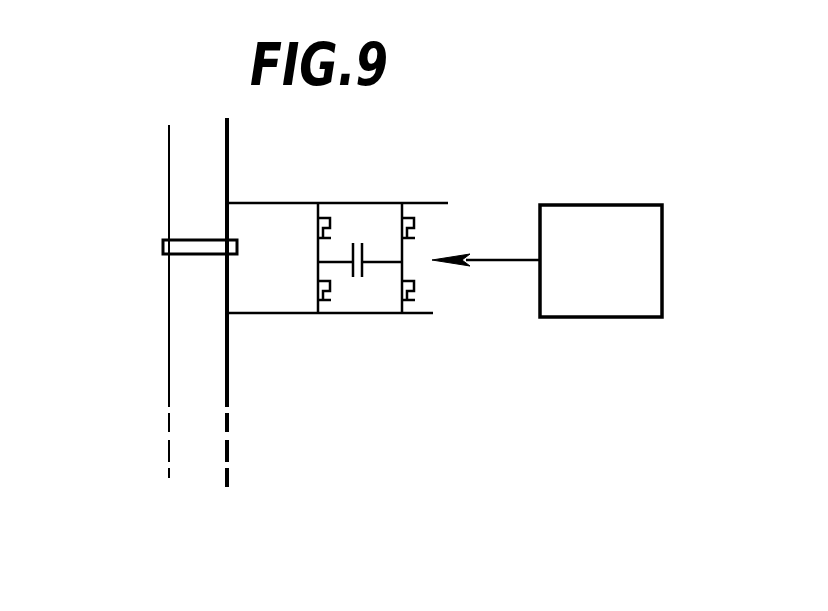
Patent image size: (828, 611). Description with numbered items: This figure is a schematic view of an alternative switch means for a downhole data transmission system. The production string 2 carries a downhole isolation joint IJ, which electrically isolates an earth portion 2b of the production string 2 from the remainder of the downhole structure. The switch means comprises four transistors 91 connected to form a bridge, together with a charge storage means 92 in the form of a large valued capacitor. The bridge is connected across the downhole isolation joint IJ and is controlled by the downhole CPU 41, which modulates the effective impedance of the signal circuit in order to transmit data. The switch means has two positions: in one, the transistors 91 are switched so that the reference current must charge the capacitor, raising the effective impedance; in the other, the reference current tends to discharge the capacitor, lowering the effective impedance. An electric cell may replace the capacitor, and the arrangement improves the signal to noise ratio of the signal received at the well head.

The production string 2 is at (203, 165).
The earth portion 2b is at (195, 378).
The downhole isolation joint IJ is at (192, 246).
The transistors 91 is at (330, 292).
The charge storage means 92 is at (357, 238).
The downhole CPU 41 is at (635, 259).